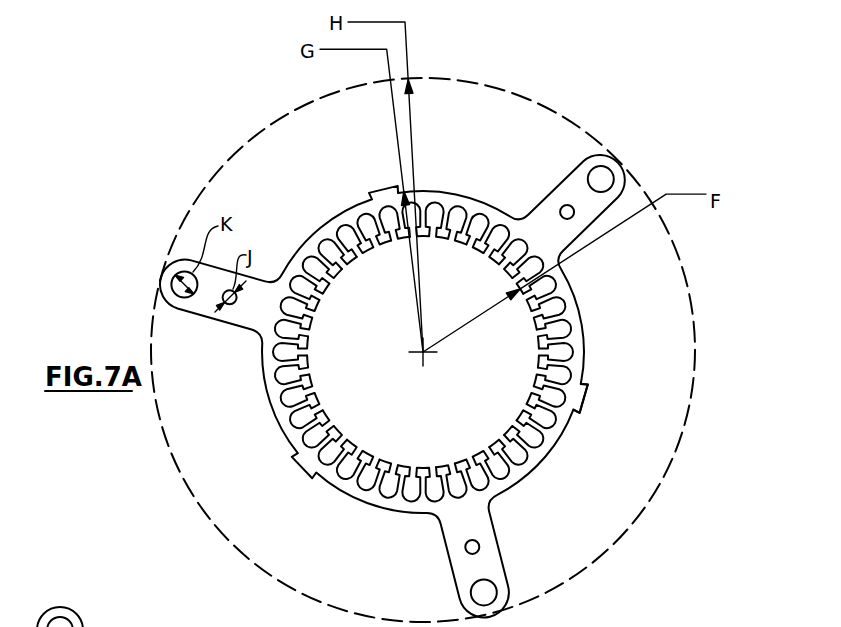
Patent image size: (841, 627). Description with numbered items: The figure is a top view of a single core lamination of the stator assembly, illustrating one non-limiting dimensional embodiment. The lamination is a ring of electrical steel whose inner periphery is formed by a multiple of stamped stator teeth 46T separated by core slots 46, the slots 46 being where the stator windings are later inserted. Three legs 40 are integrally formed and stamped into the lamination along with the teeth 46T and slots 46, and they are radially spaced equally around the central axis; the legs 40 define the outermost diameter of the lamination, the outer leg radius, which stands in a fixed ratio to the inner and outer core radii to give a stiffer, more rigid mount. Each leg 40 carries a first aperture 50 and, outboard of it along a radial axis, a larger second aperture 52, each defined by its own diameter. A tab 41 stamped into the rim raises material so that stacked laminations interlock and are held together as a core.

The leg 40 is at (558, 182).
The tab 41 is at (590, 402).
The core slot 46 is at (401, 482).
The stator tooth 46T is at (340, 436).
The first aperture 50 is at (231, 305).
The second aperture 52 is at (186, 256).